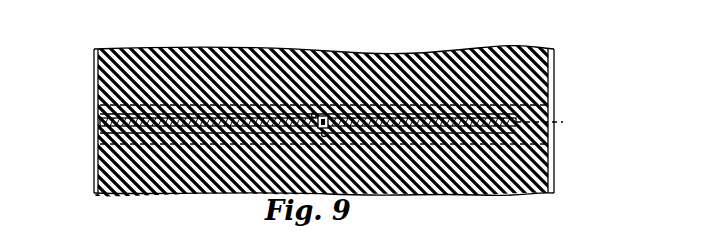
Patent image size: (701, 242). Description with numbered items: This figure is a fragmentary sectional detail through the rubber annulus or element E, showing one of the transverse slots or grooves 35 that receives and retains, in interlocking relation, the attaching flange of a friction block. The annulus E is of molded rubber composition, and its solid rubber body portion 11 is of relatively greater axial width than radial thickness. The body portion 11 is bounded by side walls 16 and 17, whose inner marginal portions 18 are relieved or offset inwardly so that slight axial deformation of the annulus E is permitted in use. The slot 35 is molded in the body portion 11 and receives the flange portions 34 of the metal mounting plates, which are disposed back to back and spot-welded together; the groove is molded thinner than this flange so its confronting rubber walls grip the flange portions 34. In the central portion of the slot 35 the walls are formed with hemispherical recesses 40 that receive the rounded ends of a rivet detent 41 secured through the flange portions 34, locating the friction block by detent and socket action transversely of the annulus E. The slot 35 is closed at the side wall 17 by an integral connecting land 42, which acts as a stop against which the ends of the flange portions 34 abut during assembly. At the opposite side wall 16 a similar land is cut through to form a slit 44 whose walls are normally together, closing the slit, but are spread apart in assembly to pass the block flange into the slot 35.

The body portion 11 is at (470, 183).
The side wall 16 is at (87, 158).
The side wall 17 is at (547, 162).
The inner marginal portion 18 is at (87, 70).
The flange portion 34 is at (92, 107).
The transverse slot 35 is at (174, 97).
The hemispherical recess 40 is at (306, 105).
The rivet detent 41 is at (319, 109).
The connecting land 42 is at (547, 114).
The slit 44 is at (92, 114).
The annulus E is at (490, 40).